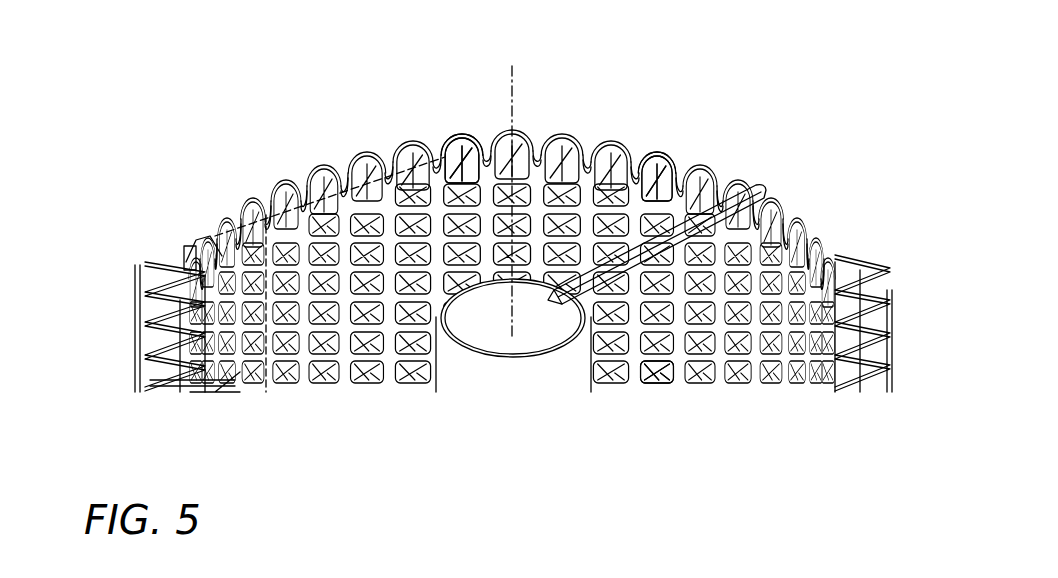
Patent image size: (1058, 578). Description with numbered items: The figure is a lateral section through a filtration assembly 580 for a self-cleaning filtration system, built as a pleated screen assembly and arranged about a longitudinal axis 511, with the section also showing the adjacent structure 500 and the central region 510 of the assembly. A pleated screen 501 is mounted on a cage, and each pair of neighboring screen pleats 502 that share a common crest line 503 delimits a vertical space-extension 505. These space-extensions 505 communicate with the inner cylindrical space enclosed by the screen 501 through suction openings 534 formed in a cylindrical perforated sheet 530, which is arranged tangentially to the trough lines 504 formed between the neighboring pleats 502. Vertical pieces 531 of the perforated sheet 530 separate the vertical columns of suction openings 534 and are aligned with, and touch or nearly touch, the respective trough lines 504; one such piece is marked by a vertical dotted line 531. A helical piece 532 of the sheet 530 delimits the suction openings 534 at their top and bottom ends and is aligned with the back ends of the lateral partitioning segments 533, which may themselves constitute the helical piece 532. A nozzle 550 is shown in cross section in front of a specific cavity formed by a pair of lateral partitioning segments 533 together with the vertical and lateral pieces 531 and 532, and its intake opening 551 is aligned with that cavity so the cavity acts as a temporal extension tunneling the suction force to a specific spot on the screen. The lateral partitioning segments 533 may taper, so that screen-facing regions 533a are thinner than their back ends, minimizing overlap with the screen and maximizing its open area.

The filtration assembly 580 is at (148, 58).
The stent frame 500 is at (712, 390).
The pleated screen 501 is at (135, 385).
The screen pleats 502 is at (185, 245).
The crest line 503 is at (140, 318).
The trough lines 504 is at (225, 400).
The vertical space-extension 505 is at (200, 228).
The central lumen opening 510 is at (522, 390).
The longitudinal axis 511 is at (516, 84).
The cylindrical perforated sheet 530 is at (385, 150).
The vertical pieces 531 is at (267, 396).
The helical piece 532 is at (268, 190).
The lateral partitioning segments 533 is at (455, 132).
The regions of the lateral partitioning segment 533a is at (672, 152).
The suction openings 534 is at (655, 395).
The nozzle 550 is at (720, 248).
The intake opening 551 is at (755, 195).